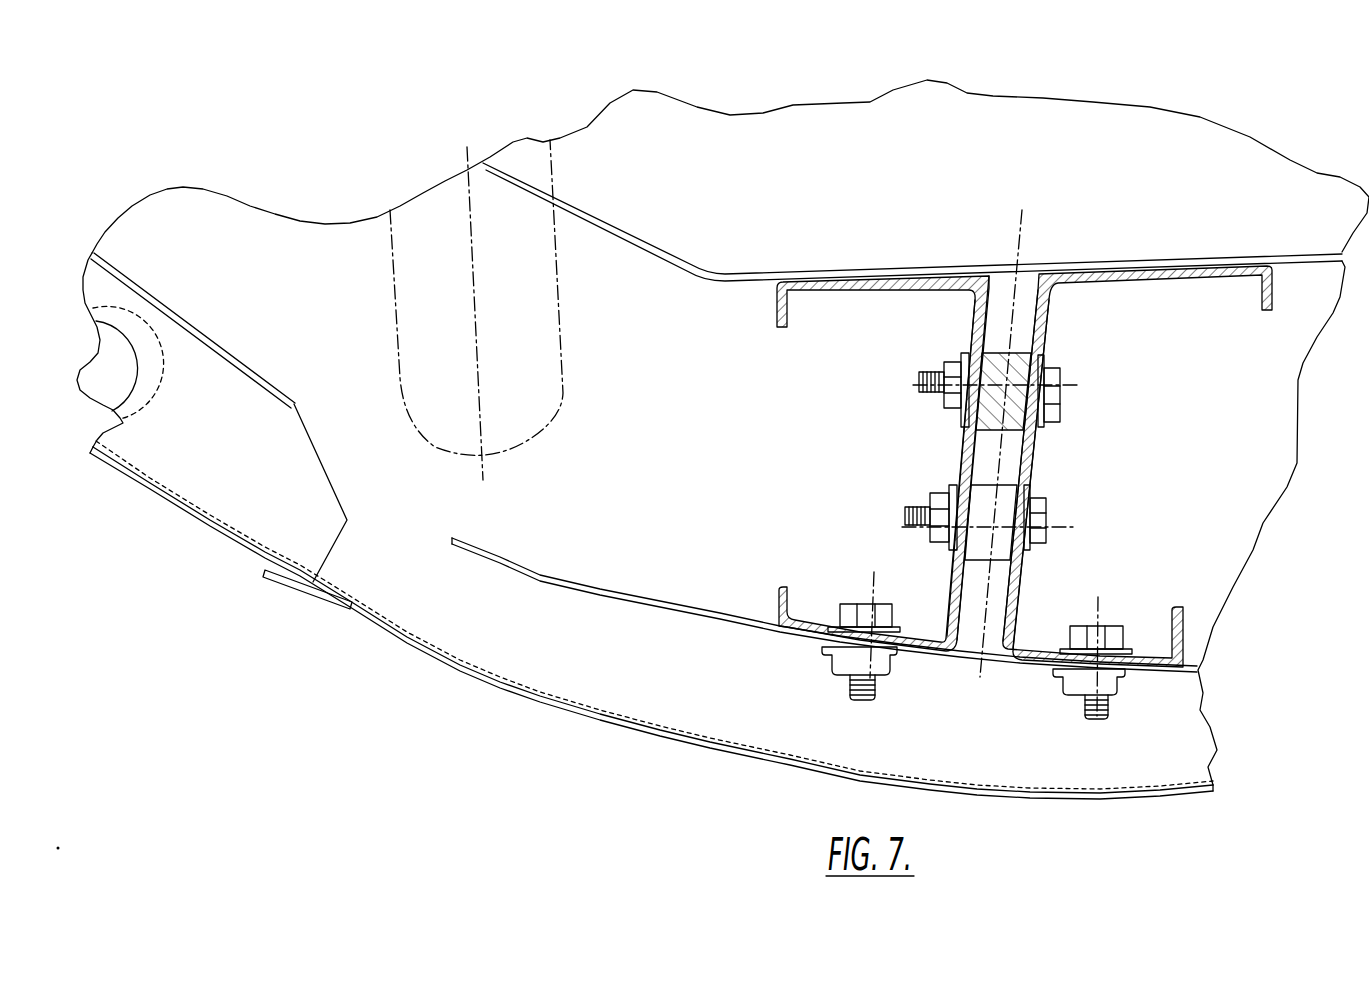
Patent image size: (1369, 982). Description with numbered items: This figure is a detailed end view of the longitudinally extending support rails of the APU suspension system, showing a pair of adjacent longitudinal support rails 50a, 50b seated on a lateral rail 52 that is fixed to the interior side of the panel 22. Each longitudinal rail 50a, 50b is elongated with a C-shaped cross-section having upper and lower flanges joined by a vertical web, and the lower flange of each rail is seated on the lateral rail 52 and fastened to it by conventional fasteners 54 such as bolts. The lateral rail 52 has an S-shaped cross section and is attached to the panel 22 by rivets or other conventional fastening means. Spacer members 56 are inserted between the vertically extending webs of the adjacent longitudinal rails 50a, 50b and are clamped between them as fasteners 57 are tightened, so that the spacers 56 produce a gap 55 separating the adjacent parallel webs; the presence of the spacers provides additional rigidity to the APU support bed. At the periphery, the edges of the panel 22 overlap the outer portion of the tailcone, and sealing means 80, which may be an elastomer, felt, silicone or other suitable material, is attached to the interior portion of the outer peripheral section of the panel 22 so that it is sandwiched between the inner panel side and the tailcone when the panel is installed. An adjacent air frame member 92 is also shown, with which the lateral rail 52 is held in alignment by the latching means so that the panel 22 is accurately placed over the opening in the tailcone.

The panel 22 is at (373, 627).
The longitudinally extending support rail 50a is at (1123, 281).
The longitudinally extending support rail 50b is at (890, 282).
The lateral rail 52 is at (455, 567).
The fastener 54 is at (860, 605).
The gap 55 is at (1030, 292).
The spacer member 56 is at (1013, 430).
The fastener 57 is at (1062, 384).
The sealing means 80 is at (293, 587).
The air frame member 92 is at (193, 492).